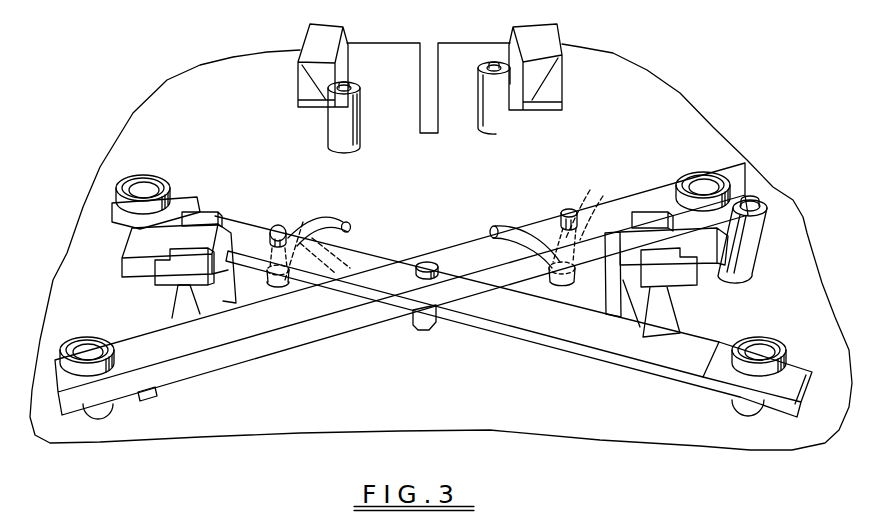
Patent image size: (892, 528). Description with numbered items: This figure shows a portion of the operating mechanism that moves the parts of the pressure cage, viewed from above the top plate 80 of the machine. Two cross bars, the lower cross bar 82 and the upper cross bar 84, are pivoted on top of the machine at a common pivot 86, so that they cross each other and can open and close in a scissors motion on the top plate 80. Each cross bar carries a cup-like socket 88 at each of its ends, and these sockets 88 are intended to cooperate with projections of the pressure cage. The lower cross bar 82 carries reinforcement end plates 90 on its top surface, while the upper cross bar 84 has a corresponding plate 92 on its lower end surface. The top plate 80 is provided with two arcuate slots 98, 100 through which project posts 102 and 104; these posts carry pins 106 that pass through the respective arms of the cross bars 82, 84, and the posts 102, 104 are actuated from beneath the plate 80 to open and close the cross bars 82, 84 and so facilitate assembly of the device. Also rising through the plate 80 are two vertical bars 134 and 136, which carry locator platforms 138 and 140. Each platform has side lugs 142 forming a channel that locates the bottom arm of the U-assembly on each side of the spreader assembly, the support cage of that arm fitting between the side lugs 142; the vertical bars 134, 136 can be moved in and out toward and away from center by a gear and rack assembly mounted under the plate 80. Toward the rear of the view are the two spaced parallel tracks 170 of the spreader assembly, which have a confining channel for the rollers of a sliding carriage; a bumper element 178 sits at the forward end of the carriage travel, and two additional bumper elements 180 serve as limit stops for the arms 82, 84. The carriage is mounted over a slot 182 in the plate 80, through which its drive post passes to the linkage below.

The top plate 80 is at (688, 126).
The lower cross bar 82 is at (250, 235).
The upper cross bar 84 is at (347, 298).
The pivot 86 is at (432, 262).
The cup-like socket 88 is at (152, 183).
The reinforcement end plate 90 is at (726, 366).
The reinforcement plate 92 is at (142, 392).
The arcuate slot 98 is at (351, 230).
The arcuate slot 100 is at (500, 225).
The post 102 is at (317, 240).
The post 104 is at (598, 210).
The pin 106 is at (272, 244).
The vertical bar 134 is at (637, 313).
The vertical bar 136 is at (210, 298).
The locator platform 138 is at (708, 252).
The locator platform 140 is at (127, 253).
The side lug 142 is at (193, 257).
The track 170 is at (300, 42).
The bumper element 178 is at (486, 126).
The bumper element 180 is at (333, 131).
The slot 182 is at (433, 53).